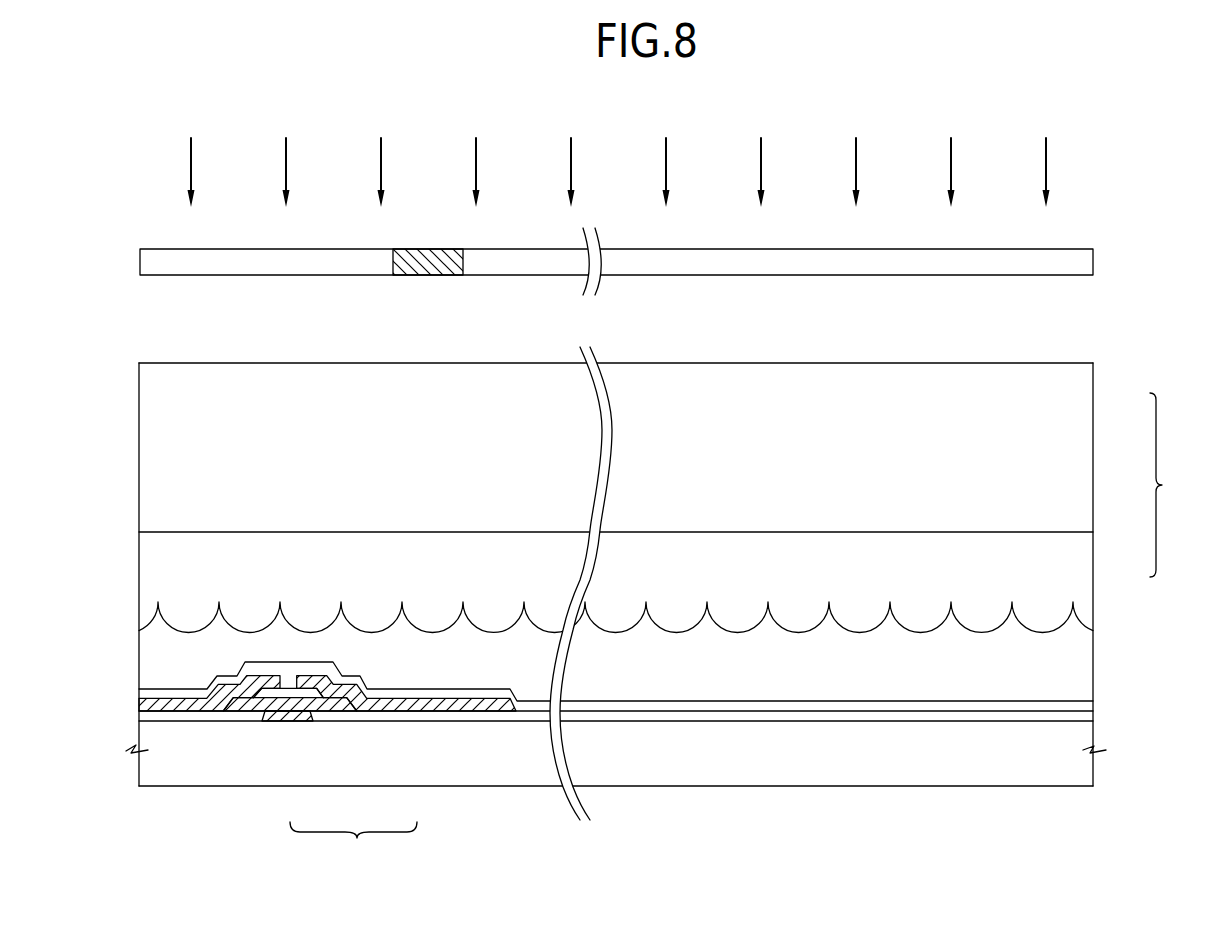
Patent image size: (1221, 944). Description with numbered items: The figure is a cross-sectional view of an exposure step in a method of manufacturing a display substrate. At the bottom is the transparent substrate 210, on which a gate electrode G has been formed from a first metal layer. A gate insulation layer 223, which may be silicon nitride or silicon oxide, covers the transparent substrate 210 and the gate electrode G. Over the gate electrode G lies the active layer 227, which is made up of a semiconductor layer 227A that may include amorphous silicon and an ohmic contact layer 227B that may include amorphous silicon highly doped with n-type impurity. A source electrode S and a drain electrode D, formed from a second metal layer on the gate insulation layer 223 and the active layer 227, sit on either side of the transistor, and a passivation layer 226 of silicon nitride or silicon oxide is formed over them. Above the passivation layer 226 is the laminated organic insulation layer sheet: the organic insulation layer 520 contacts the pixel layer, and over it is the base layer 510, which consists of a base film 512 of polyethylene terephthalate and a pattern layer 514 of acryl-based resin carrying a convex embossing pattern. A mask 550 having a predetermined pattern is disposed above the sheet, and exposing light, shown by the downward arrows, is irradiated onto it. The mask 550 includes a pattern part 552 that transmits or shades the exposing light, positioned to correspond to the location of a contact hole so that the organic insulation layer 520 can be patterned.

The mask 550 is at (1095, 262).
The pattern part 552 is at (427, 249).
The base layer 510 is at (1177, 485).
The base film 512 is at (1083, 408).
The pattern layer 514 is at (1083, 567).
The organic insulation layer 520 is at (1083, 663).
The passivation layer 226 is at (738, 703).
The gate insulation layer 223 is at (675, 717).
The active layer 227 is at (353, 843).
The semiconductor layer 227A is at (318, 707).
The ohmic contact layer 227B is at (334, 698).
The source electrode S is at (202, 707).
The drain electrode D is at (455, 707).
The gate electrode G is at (277, 720).
The transparent substrate 210 is at (1040, 742).